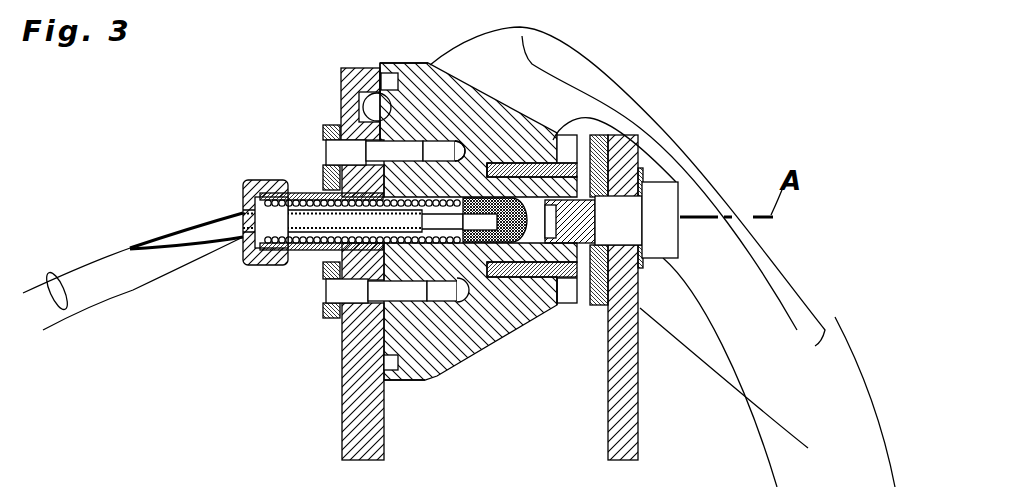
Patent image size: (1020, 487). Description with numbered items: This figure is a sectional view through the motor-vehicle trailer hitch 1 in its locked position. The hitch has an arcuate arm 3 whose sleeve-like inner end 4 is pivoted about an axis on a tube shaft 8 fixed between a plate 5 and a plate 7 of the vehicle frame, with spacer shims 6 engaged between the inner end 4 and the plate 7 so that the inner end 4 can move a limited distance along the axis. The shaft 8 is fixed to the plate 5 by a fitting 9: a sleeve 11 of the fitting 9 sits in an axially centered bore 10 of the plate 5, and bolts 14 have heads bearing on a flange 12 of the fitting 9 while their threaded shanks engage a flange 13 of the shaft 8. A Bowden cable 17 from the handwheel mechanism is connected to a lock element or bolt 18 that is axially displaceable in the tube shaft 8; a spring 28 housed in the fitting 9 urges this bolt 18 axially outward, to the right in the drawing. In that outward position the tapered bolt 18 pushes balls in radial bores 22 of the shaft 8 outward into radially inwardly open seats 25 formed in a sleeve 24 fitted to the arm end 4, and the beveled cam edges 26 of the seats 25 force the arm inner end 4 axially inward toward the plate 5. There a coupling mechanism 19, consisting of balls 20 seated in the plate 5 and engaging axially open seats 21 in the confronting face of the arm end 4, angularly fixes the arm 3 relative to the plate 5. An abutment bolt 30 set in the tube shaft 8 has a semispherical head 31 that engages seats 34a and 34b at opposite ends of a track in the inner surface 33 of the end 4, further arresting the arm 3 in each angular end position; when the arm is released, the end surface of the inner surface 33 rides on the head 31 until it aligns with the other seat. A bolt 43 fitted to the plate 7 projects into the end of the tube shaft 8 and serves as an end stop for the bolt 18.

The motor-vehicle trailer hitch 1 is at (256, 66).
The arcuate arm 3 is at (817, 360).
The sleeve-like inner end 4 is at (493, 122).
The plate 5 is at (350, 430).
The spacer shims 6 is at (600, 304).
The plate 7 is at (630, 404).
The tube shaft 8 is at (532, 285).
The fitting 9 is at (300, 196).
The axially centered bore 10 is at (370, 147).
The sleeve 11 is at (372, 287).
The flange 12 is at (333, 320).
The flange 13 is at (430, 125).
The bolts 14 is at (311, 150).
The Bowden cable 17 is at (98, 263).
The lock element or bolt 18 is at (588, 226).
The coupling mechanism 19 is at (349, 97).
The balls 20 is at (374, 96).
The axially open seats 21 is at (390, 73).
The radial bores 22 is at (565, 290).
The sleeve 24 is at (578, 290).
The seats 25 is at (537, 165).
The beveled cam edges 26 is at (497, 163).
The spring 28 is at (273, 265).
The abutment bolt 30 is at (440, 366).
The semispherical head 31 is at (484, 256).
The inner surface 33 is at (426, 382).
The seat 34a is at (496, 150).
The seat 34b is at (508, 277).
The bolt 43 is at (663, 222).